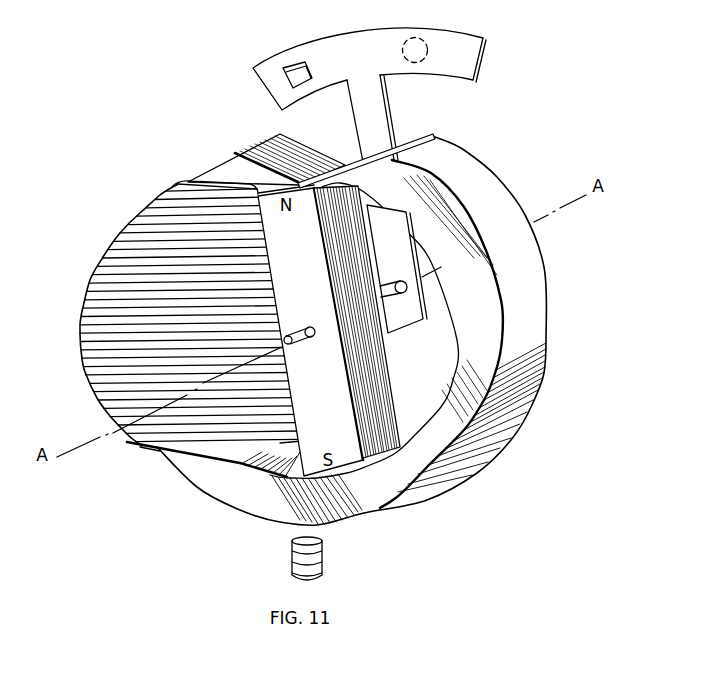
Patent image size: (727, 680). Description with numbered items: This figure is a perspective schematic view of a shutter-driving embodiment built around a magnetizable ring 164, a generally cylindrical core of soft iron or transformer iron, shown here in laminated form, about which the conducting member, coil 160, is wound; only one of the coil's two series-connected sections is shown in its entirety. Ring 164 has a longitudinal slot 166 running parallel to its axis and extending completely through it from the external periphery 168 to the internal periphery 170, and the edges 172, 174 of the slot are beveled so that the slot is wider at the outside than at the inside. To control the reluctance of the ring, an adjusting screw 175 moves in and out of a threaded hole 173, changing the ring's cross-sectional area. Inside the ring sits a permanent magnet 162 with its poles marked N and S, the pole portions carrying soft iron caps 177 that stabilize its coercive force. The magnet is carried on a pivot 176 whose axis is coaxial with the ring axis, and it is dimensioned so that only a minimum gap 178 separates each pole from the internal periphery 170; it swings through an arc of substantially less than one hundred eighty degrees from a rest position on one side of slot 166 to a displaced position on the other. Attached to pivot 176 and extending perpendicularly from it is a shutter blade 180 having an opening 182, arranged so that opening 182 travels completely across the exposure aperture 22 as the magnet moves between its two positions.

The exposure aperture 22 is at (420, 40).
The coil 160 is at (97, 293).
The magnet 162 is at (285, 442).
The ring 164 is at (185, 462).
The longitudinal slot 166 is at (357, 162).
The external periphery 168 is at (527, 286).
The internal periphery 170 is at (512, 336).
The edge of slot 172 is at (285, 157).
The threaded hole 173 is at (290, 466).
The edge of slot 174 is at (375, 165).
The adjusting screw 175 is at (330, 560).
The pivot 176 is at (300, 343).
The caps 177 is at (260, 187).
The gap 178 is at (187, 180).
The shutter blade 180 is at (467, 58).
The opening 182 is at (302, 63).